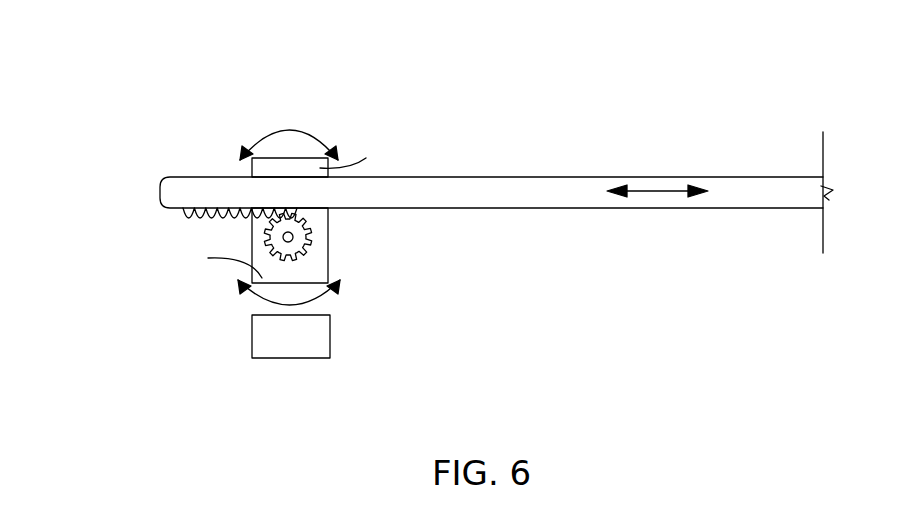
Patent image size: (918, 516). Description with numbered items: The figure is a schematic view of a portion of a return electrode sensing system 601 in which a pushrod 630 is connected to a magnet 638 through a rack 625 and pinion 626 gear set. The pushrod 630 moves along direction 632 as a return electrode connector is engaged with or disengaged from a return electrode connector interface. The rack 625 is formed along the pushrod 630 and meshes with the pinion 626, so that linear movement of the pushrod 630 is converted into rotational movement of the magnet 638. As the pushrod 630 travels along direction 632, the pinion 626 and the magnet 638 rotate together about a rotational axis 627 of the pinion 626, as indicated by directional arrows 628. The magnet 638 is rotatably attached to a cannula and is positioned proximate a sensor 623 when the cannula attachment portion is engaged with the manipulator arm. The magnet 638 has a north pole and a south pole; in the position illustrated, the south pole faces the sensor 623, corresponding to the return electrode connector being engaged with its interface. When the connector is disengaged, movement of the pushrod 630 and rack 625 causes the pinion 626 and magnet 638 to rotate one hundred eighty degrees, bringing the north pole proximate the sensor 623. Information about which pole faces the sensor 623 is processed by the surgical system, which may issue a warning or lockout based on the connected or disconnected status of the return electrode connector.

The return electrode sensing system 601 is at (100, 106).
The sensor 623 is at (297, 347).
The rack 625 is at (197, 216).
The pinion gear 626 is at (310, 245).
The rotational axis 627 is at (295, 237).
The directional arrows 628 is at (286, 130).
The pushrod 630 is at (512, 185).
The direction 632 is at (658, 192).
The magnet 638 is at (315, 268).